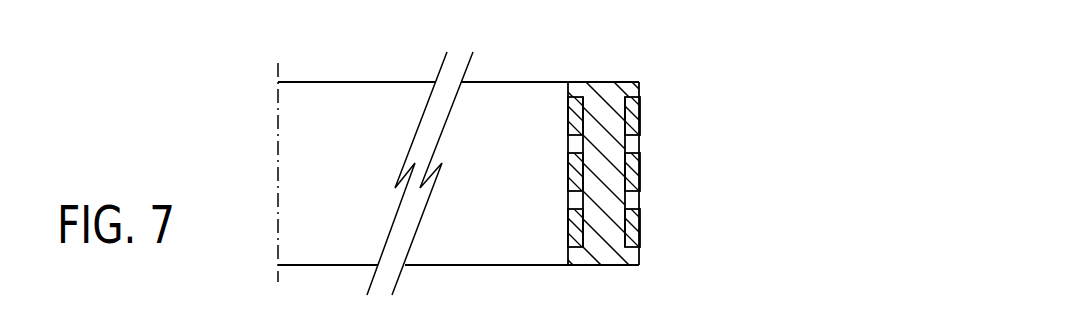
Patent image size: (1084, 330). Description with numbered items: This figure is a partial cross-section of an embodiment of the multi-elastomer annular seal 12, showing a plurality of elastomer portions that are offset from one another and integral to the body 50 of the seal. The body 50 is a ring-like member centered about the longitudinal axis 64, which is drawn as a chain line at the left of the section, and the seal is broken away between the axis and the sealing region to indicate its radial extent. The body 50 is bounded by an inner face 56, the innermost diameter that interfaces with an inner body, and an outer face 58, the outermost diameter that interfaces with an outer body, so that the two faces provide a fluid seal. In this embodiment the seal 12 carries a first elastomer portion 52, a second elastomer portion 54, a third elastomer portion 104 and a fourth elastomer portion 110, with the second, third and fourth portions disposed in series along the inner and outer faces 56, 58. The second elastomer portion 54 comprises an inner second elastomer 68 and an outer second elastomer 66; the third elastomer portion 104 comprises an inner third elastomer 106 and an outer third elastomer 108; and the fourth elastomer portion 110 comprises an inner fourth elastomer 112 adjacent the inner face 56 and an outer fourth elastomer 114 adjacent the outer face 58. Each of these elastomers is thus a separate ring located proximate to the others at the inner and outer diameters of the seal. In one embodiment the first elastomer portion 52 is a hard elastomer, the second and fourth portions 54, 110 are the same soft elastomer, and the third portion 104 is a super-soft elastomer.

The annular seal 12 is at (734, 78).
The body 50 is at (603, 82).
The first elastomer portion 52 is at (632, 88).
The second elastomer portion 54 is at (604, 116).
The inner face 56 is at (568, 253).
The outer face 58 is at (640, 258).
The longitudinal axis 64 is at (278, 72).
The outer second elastomer 66 is at (632, 115).
The inner second elastomer 68 is at (568, 115).
The third elastomer portion 104 is at (610, 172).
The inner third elastomer 106 is at (568, 172).
The outer third elastomer 108 is at (637, 172).
The fourth elastomer portion 110 is at (610, 228).
The inner fourth elastomer 112 is at (568, 228).
The outer fourth elastomer 114 is at (633, 220).